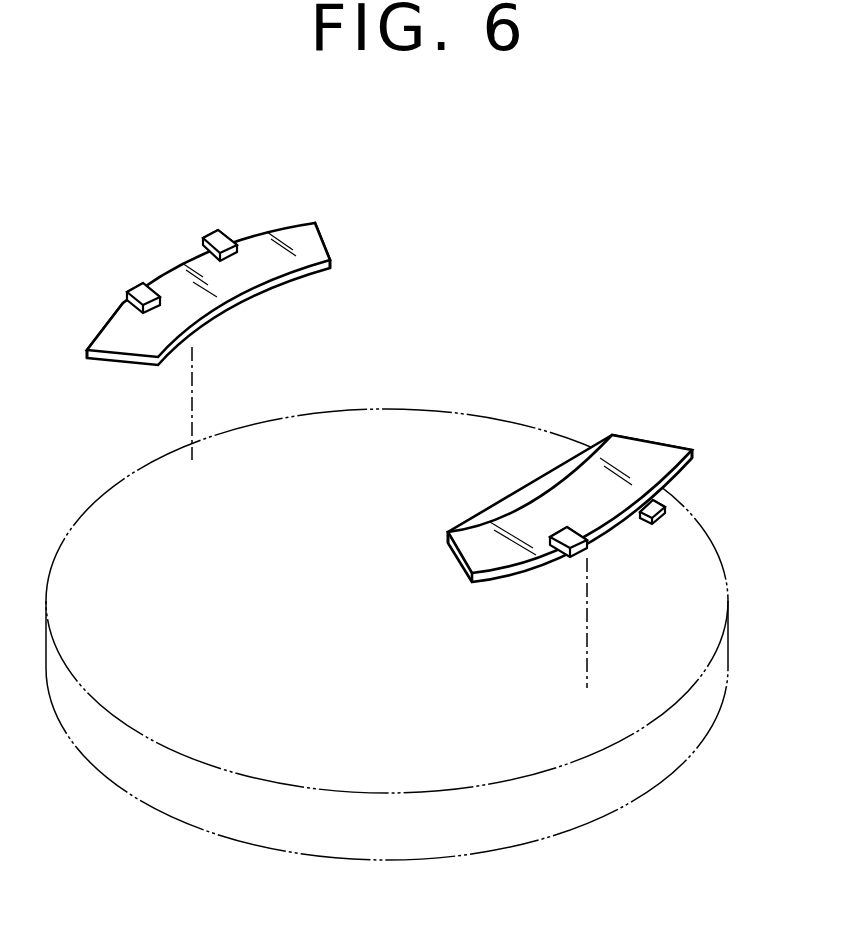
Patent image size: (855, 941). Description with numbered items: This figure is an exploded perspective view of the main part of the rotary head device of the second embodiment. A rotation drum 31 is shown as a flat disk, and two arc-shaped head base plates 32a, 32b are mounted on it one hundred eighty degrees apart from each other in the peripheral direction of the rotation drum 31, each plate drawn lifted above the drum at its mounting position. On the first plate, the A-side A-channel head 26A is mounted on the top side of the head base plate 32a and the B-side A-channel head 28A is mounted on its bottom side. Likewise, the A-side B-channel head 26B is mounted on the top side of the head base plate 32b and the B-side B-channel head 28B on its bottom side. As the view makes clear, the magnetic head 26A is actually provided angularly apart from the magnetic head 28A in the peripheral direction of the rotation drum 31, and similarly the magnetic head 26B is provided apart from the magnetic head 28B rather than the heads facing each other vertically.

The rotation drum 31 is at (637, 797).
The head base plate 32a is at (317, 243).
The head base plate 32b is at (660, 445).
The A-side A-channel head 26A is at (215, 232).
The B-side A-channel head 28A is at (130, 290).
The A-side B-channel head 26B is at (588, 548).
The B-side B-channel head 28B is at (663, 515).